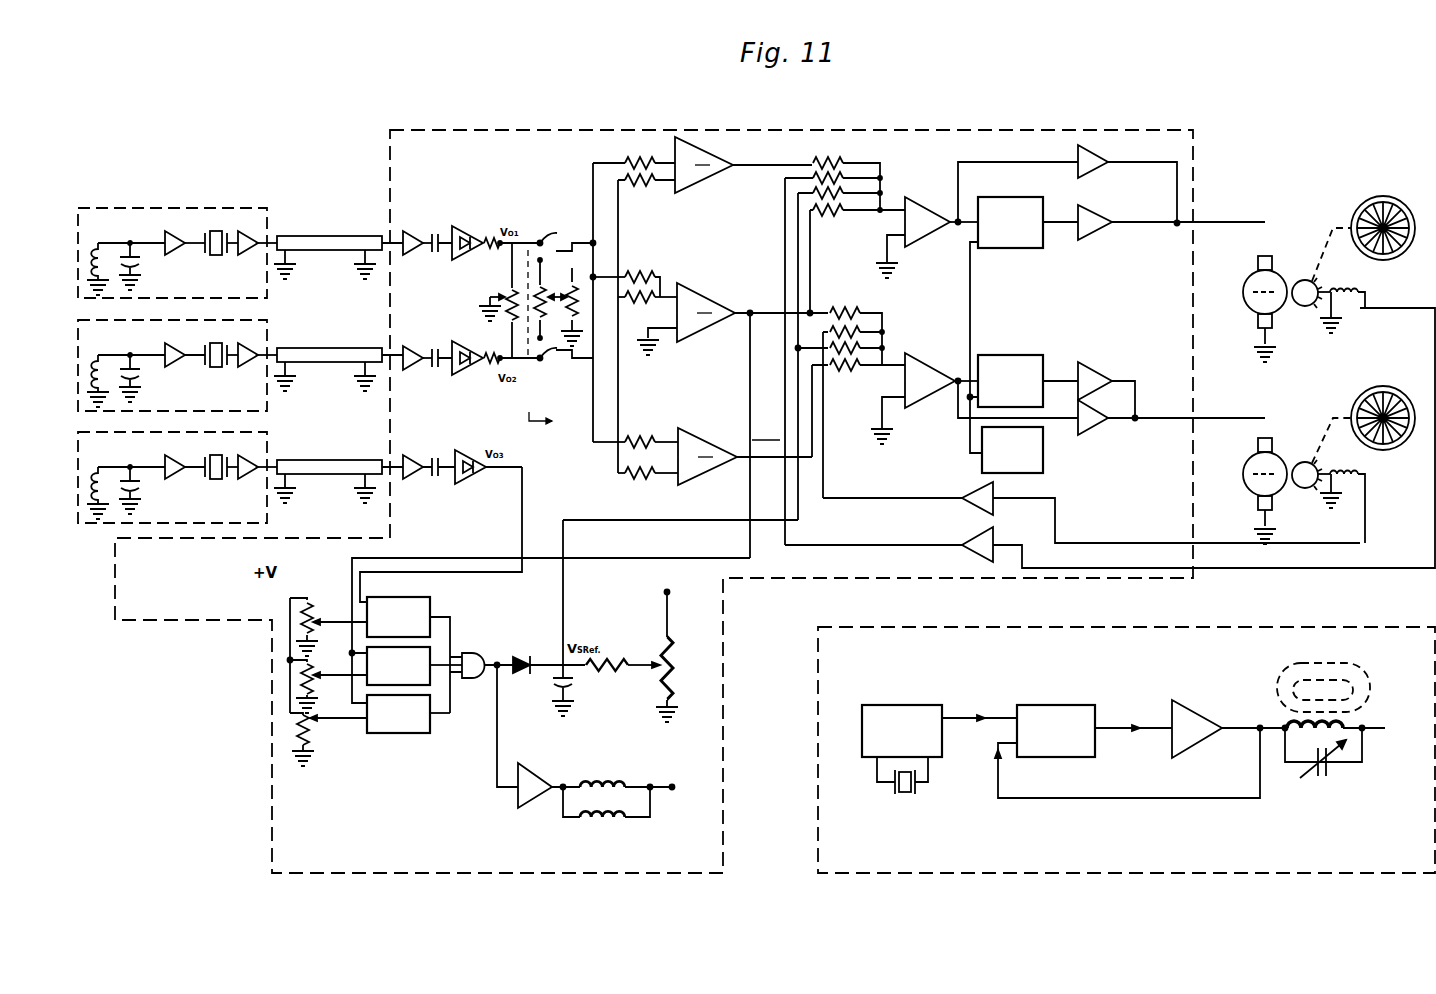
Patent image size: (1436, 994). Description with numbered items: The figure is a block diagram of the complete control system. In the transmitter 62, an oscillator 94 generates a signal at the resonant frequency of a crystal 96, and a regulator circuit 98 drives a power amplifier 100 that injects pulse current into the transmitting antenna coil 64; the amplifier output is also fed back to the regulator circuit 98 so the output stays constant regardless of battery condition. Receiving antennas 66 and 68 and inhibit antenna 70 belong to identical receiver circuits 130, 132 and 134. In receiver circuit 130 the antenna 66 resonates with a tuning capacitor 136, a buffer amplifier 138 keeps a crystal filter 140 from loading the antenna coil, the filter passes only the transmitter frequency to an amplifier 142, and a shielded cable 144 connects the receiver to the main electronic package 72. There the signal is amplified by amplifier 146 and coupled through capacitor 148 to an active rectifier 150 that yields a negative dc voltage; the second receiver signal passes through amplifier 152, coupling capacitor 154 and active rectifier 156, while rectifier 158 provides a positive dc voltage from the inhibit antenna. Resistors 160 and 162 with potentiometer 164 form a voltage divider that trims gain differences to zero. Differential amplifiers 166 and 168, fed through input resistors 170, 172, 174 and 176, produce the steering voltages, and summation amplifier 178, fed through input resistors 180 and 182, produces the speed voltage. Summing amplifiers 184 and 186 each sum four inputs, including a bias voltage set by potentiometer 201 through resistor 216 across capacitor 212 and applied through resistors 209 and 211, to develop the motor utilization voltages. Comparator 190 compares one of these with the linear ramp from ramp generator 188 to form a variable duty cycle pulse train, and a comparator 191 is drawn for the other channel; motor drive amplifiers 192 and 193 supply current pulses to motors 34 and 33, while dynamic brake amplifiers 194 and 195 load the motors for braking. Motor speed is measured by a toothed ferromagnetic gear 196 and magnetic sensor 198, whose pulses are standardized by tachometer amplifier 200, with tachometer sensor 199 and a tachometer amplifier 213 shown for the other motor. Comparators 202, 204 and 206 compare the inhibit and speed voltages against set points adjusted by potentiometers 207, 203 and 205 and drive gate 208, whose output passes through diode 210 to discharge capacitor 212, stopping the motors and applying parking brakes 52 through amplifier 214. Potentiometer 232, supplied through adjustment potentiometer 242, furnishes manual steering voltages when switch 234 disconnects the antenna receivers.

The drive motor 33 is at (1243, 470).
The drive motor 34 is at (1243, 288).
The parking brakes 52 is at (616, 780).
The transmitter 62 is at (818, 752).
The transmitting antenna coil 64 is at (1345, 720).
The receiving antenna 66 is at (98, 240).
The receiving antenna 68 is at (97, 360).
The inhibit antenna 70 is at (97, 472).
The main electronic package 72 is at (432, 130).
The oscillator 94 is at (926, 706).
The crystal 96 is at (900, 794).
The regulator circuit 98 is at (1071, 706).
The power amplifier 100 is at (1195, 735).
The receiver circuit 130 is at (267, 228).
The receiver circuit 132 is at (268, 340).
The receiver circuit 134 is at (268, 452).
The tuning capacitor 136 is at (136, 263).
The buffer amplifier 138 is at (172, 231).
The crystal filter 140 is at (215, 230).
The amplifier 142 is at (250, 258).
The shielded cable 144 is at (318, 236).
The amplifier 146 is at (412, 230).
The capacitor 148 is at (435, 255).
The active rectifier 150 is at (462, 230).
The amplifier 152 is at (402, 352).
The coupling capacitor 154 is at (435, 370).
The active rectifier 156 is at (448, 372).
The rectifier 158 is at (474, 486).
The resistor 160 is at (495, 236).
The resistor 162 is at (484, 355).
The potentiometer 164 is at (507, 293).
The differential amplifier 166 is at (701, 184).
The differential amplifier 168 is at (712, 420).
The input resistor 170 is at (640, 157).
The input resistor 172 is at (624, 178).
The input resistor 174 is at (646, 440).
The input resistor 176 is at (640, 479).
The summation amplifier 178 is at (699, 338).
The input resistor 180 is at (634, 272).
The input resistor 182 is at (652, 296).
The summing amplifier 184 is at (902, 230).
The summing amplifier 186 is at (907, 356).
The ramp generator 188 is at (1043, 455).
The comparator circuit 190 is at (991, 212).
The comparator 191 is at (1003, 355).
The motor drive amplifier 192 is at (1091, 215).
The motor drive amplifier 193 is at (1090, 370).
The dynamic brake amplifier 194 is at (1082, 150).
The dynamic braking amplifier 195 is at (1092, 430).
The ferromagnetic gear 196 is at (1303, 303).
The magnetic sensor 198 is at (1362, 292).
The tachometer sensor 199 is at (1340, 485).
The tachometer amplifier 200 is at (970, 548).
The potentiometer 201 is at (672, 655).
The comparator 202 is at (437, 607).
The potentiometer 203 is at (290, 677).
The comparator 204 is at (432, 660).
The potentiometer 205 is at (322, 738).
The comparator 206 is at (405, 735).
The potentiometer 207 is at (303, 618).
The gate 208 is at (474, 680).
The resistors 209 is at (848, 193).
The diode 210 is at (528, 680).
The resistors 211 is at (868, 348).
The capacitor 212 is at (574, 683).
The threshold amplifier 213 is at (985, 500).
The amplifier 214 is at (518, 795).
The resistor 216 is at (610, 660).
The potentiometer 232 is at (545, 262).
The switch 234 is at (548, 240).
The adjustment potentiometer 242 is at (578, 292).